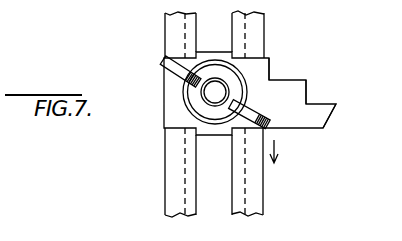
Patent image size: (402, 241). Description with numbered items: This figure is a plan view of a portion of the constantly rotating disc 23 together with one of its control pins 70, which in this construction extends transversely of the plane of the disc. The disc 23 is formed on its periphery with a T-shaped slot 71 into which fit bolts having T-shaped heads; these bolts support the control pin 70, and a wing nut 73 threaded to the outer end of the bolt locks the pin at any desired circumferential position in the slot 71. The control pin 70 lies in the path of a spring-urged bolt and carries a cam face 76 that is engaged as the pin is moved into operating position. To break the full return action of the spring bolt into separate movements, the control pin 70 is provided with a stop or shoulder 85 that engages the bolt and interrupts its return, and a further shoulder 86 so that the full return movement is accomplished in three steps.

The disc 23 is at (165, 175).
The T-shaped slot 71 is at (208, 197).
The control pin 70 is at (305, 120).
The wing nut 73 is at (163, 61).
The further shoulder 86 is at (270, 66).
The stop or shoulder 85 is at (308, 93).
The cam face 76 is at (335, 115).